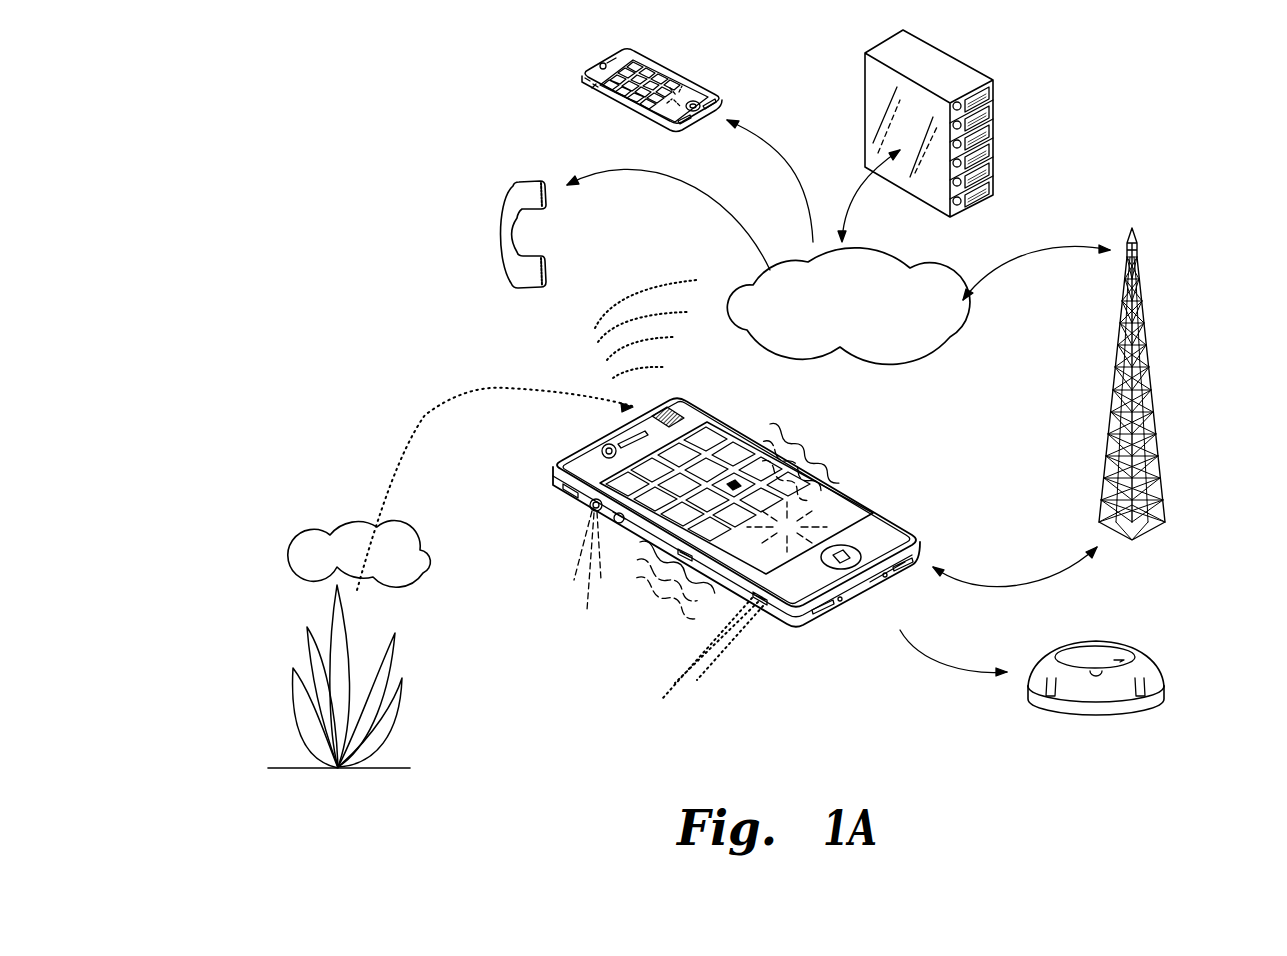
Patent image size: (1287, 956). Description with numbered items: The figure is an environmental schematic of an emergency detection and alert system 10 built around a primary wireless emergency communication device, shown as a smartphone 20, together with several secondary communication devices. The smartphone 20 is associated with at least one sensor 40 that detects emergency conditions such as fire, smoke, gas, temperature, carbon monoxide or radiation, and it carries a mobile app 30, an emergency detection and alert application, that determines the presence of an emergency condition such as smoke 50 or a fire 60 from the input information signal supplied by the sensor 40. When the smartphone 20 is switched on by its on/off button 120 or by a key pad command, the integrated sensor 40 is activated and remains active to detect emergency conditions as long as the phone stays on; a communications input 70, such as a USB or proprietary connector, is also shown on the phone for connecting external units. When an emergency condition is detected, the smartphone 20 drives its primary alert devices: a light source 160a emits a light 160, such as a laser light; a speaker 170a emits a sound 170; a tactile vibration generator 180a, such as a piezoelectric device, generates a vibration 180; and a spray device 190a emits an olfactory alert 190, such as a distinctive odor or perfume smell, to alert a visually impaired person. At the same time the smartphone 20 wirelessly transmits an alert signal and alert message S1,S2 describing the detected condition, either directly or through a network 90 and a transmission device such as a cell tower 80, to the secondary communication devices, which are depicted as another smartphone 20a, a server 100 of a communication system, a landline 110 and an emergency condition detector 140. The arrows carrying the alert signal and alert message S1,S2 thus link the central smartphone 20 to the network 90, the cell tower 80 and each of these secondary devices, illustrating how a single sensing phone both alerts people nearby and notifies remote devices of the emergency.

The emergency detection and alert system 10 is at (377, 127).
The smartphone 20 is at (917, 485).
The smartphone 20a is at (687, 63).
The mobile app 30 is at (745, 473).
The sensor 40 is at (683, 398).
The smoke 50 is at (320, 517).
The fire 60 is at (427, 653).
The communications input 70 is at (857, 603).
The cell tower 80 is at (1165, 350).
The network 90 is at (917, 273).
The server 100 is at (995, 120).
The landline 110 is at (505, 193).
The on/off button 120 is at (860, 540).
The emergency condition detector 140 is at (1158, 633).
The light 160 is at (572, 533).
The light source 160a is at (568, 512).
The sound 170 is at (644, 290).
The speaker 170a is at (627, 437).
The vibration 180 is at (658, 587).
The tactile vibration generator 180a is at (678, 556).
The olfactory alert 190 is at (700, 672).
The spray device 190a is at (757, 604).
The alert signal and alert message S1,S2 is at (808, 200).